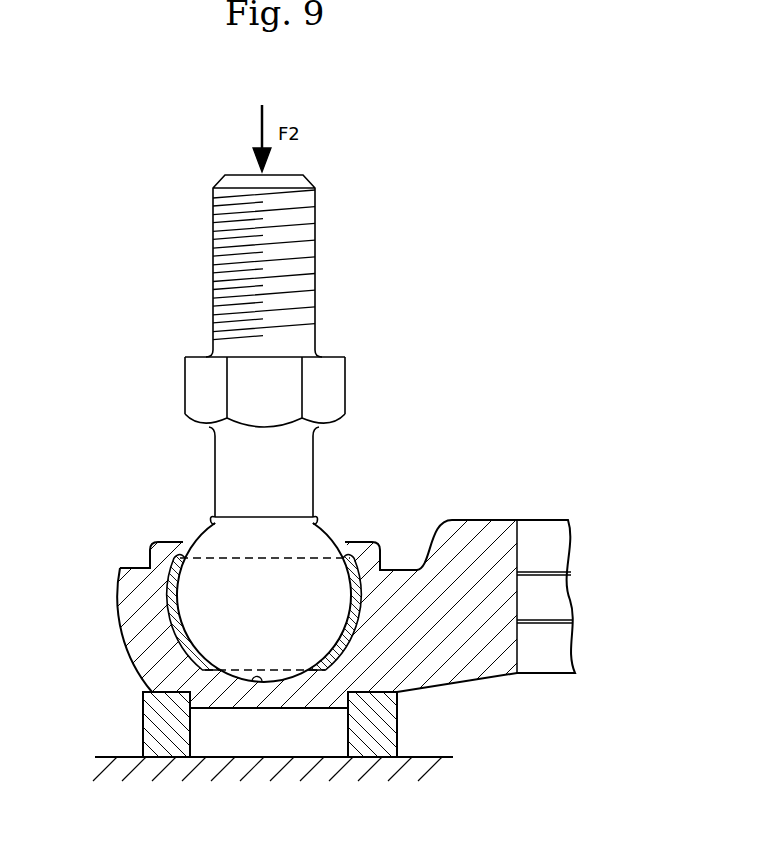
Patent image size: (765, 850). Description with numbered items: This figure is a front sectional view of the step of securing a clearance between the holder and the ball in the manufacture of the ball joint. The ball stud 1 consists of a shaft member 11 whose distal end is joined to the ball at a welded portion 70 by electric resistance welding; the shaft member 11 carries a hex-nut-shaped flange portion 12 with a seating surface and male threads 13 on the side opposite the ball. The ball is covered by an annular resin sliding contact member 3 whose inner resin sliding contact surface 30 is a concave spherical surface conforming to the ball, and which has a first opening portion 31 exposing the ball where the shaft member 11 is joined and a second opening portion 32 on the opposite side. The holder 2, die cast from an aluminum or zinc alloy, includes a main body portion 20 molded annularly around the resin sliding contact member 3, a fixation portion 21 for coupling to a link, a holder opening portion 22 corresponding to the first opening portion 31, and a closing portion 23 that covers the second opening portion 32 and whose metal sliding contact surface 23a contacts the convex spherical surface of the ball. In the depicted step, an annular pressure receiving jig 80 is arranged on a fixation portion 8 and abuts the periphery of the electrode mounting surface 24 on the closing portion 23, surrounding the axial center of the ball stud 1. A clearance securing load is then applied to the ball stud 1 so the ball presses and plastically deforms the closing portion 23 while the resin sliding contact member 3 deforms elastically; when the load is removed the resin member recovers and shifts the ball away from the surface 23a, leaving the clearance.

The ball stud 1 is at (293, 496).
The shaft member 11 is at (296, 466).
The flange portion 12 is at (330, 385).
The male threads 13 is at (316, 250).
The holder 2 is at (376, 633).
The main body portion 20 is at (137, 624).
The fixation portion 21 is at (480, 520).
The holder opening portion 22 is at (188, 542).
The closing portion 23 is at (216, 700).
The metal sliding contact surface 23a is at (253, 677).
The electrode mounting surface 24 is at (322, 706).
The resin sliding contact member 3 is at (262, 605).
The resin sliding contact surface 30 is at (185, 602).
The first opening portion 31 is at (302, 557).
The second opening portion 32 is at (287, 673).
The welded portion 70 is at (238, 513).
The pressure receiving jig 80 is at (397, 726).
The fixation portion 8 is at (430, 757).